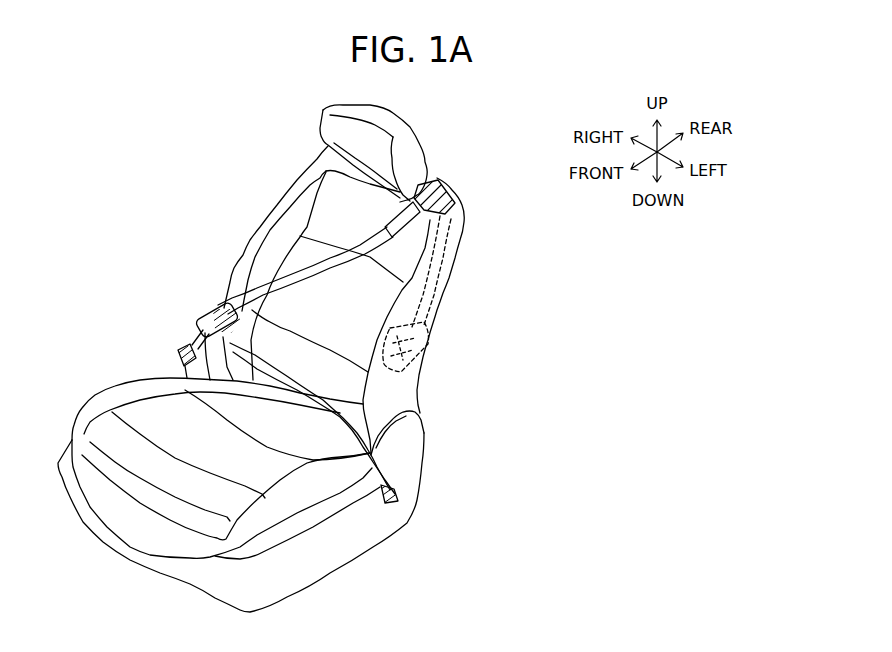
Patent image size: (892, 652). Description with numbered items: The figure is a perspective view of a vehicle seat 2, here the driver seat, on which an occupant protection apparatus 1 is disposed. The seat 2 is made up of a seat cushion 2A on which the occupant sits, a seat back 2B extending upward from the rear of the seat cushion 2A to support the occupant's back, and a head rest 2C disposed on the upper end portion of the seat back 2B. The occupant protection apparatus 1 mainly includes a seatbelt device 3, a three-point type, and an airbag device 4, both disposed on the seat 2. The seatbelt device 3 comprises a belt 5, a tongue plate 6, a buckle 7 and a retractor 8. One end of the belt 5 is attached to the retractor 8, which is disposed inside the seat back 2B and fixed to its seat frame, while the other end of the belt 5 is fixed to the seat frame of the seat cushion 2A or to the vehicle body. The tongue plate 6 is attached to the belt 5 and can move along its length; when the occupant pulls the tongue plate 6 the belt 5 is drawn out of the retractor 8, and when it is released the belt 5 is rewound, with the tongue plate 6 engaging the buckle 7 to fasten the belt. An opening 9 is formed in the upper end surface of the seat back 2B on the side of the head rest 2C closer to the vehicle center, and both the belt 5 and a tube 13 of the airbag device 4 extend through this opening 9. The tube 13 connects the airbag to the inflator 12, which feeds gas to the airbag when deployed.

The occupant protection apparatus 1 is at (434, 130).
The vehicle seat 2 is at (232, 128).
The seat cushion 2A is at (155, 393).
The seat back 2B is at (257, 267).
The head rest 2C is at (322, 139).
The seatbelt device 3 is at (463, 185).
The airbag device 4 is at (446, 166).
The belt 5 is at (385, 268).
The tongue plate 6 is at (208, 307).
The buckle 7 is at (183, 350).
The retractor 8 is at (430, 360).
The opening 9 is at (467, 212).
The inflator 12 is at (462, 272).
The tube 13 is at (447, 232).